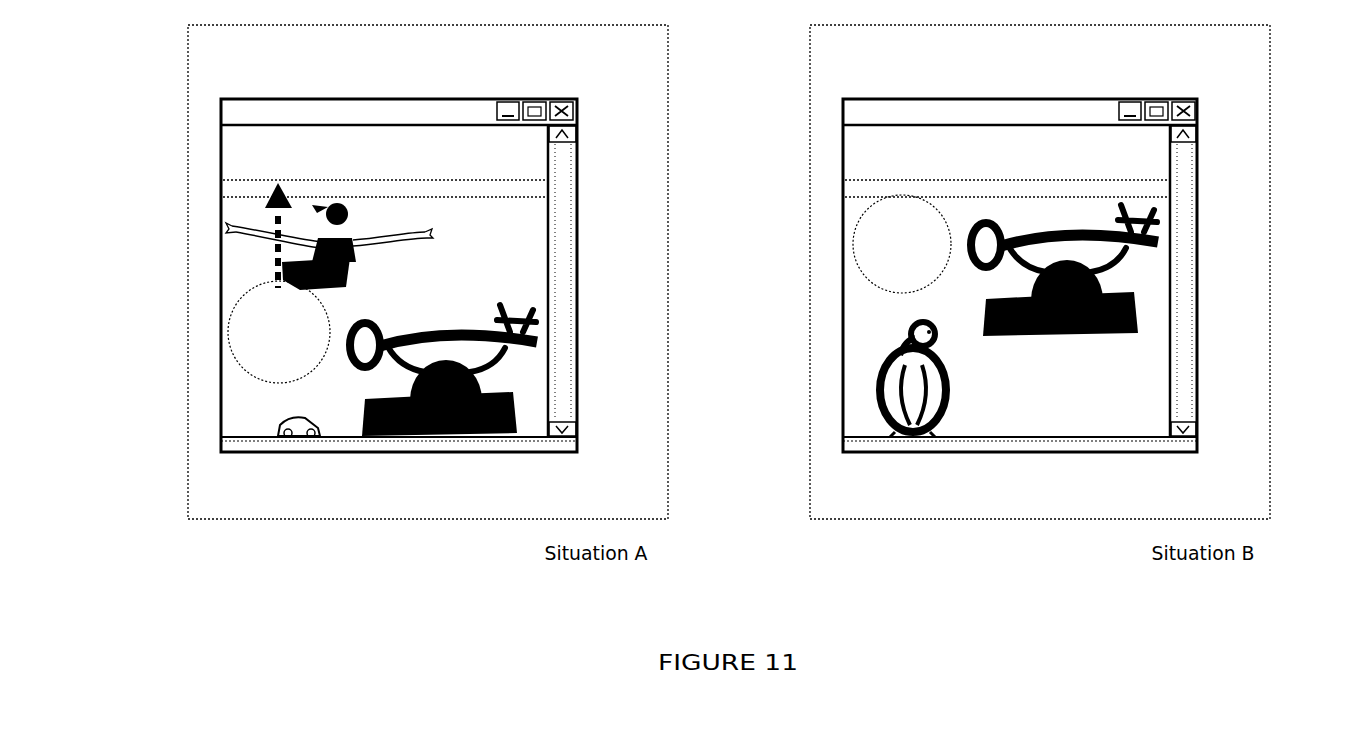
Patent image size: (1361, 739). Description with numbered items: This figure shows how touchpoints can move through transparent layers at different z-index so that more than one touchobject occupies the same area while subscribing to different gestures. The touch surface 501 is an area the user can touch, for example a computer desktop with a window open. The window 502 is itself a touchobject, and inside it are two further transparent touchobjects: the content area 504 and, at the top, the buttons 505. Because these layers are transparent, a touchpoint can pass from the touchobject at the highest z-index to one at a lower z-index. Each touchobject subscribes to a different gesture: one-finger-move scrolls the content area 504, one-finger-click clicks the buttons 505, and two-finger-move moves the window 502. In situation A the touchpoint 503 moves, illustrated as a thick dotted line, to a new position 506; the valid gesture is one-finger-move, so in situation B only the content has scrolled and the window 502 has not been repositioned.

The touch surface 501 is at (729, 272).
The window 502 is at (222, 310).
The touchpoint 503 is at (279, 332).
The content area 504 is at (322, 365).
The buttons 505 is at (578, 111).
The new position 506 is at (902, 244).